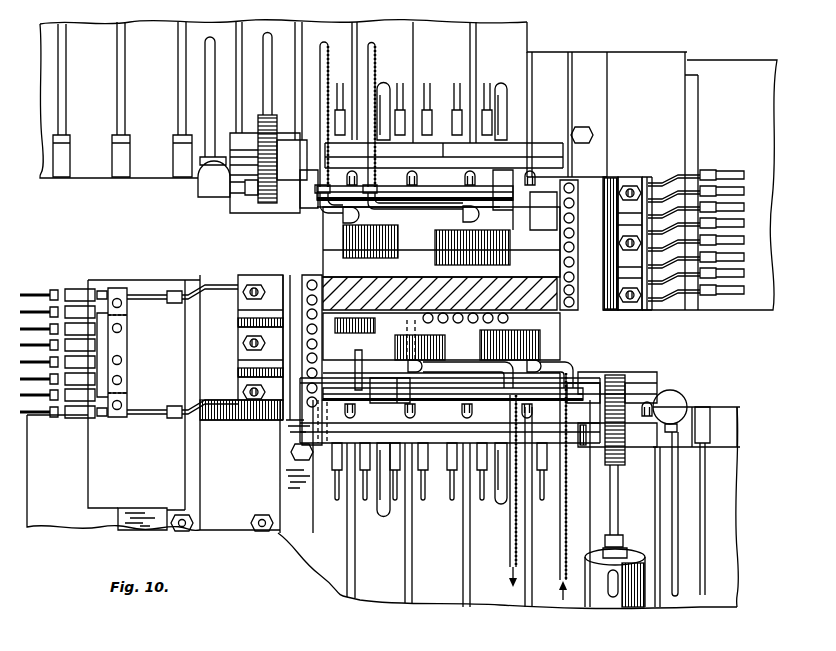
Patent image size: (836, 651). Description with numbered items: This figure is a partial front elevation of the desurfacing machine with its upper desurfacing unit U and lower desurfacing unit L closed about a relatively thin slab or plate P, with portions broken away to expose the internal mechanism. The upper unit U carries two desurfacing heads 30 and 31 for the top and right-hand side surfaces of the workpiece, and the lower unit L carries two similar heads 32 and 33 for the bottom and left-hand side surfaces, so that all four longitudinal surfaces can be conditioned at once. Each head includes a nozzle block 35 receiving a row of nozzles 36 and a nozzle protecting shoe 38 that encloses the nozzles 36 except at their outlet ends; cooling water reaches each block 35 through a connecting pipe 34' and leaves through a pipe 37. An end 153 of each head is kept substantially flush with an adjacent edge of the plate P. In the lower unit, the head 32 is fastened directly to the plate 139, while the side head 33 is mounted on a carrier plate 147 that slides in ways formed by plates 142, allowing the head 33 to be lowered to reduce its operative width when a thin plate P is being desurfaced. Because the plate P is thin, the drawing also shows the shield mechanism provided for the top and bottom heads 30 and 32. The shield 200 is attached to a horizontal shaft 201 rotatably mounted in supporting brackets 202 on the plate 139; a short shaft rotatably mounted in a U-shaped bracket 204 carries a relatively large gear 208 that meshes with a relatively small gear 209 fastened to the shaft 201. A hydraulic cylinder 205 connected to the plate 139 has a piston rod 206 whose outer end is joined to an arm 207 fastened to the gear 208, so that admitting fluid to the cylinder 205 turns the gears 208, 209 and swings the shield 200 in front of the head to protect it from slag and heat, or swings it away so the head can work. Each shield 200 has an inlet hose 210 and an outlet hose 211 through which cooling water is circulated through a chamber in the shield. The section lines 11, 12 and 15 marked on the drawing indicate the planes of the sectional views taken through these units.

The desurfacing head 30 is at (538, 203).
The desurfacing head 31 is at (619, 178).
The desurfacing head 32 is at (315, 402).
The desurfacing head 33 is at (250, 268).
The connecting pipe 34' is at (515, 339).
The nozzle block 35 is at (662, 178).
The nozzles 36 is at (573, 185).
The pipe 37 is at (383, 505).
The nozzle protecting shoe 38 is at (594, 203).
The plate 139 is at (503, 60).
The plate 142 is at (590, 72).
The carrier plate 147 is at (728, 95).
The end of head 153 is at (550, 248).
The shield 200 is at (470, 238).
The horizontal shaft 201 is at (247, 147).
The supporting brackets 202 is at (332, 170).
The U-shaped bracket 204 is at (233, 207).
The hydraulic cylinder 205 is at (600, 573).
The piston rod 206 is at (268, 53).
The arm 207 is at (640, 402).
The relatively large gear 208 is at (278, 113).
The relatively small gear 209 is at (267, 200).
The inlet hose 210 is at (337, 40).
The outlet hose 211 is at (375, 57).
The upper desurfacing unit U is at (139, 191).
The lower desurfacing unit L is at (176, 268).
The slab or plate P is at (518, 288).
The section line 11- 11 is at (120, 242).
The section line 12- 12 is at (318, 319).
The section line 15- 15 is at (634, 390).